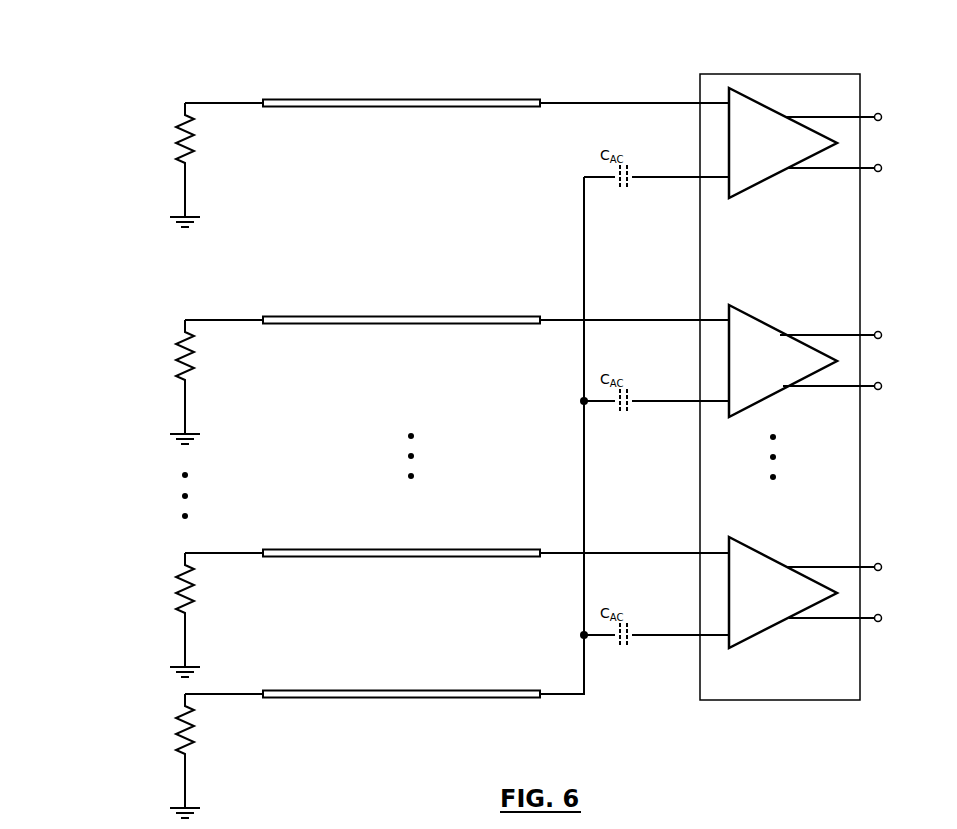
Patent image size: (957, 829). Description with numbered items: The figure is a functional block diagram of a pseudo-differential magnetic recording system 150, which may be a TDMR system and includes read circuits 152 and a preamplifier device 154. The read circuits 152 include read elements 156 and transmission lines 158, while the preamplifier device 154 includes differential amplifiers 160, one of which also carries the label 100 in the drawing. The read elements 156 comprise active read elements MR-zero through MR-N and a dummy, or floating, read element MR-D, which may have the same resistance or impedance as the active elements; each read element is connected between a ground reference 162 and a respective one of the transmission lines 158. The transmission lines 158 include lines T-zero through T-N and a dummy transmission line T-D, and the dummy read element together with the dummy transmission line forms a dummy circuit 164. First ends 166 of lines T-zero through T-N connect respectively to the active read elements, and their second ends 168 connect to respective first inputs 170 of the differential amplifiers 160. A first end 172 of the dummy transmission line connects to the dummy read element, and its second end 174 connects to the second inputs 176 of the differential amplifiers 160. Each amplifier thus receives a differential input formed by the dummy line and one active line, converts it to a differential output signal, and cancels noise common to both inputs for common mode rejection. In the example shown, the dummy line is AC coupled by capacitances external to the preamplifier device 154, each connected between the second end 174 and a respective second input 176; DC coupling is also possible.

The amplifier 100 is at (729, 306).
The pseudo-differential magnetic recording system 150 is at (200, 57).
The read circuits 152 is at (319, 150).
The preamplifier device 154 is at (861, 90).
The read elements 156 is at (196, 135).
The transmission lines 158 is at (475, 99).
The differential amplifiers 160 is at (772, 110).
The ground reference 162 is at (192, 217).
The dummy circuit 164 is at (311, 732).
The first ends 166 is at (263, 99).
The second ends 168 is at (541, 107).
The first inputs 170 is at (712, 101).
The first end 172 is at (263, 690).
The second end 174 is at (541, 698).
The second inputs 176 is at (712, 175).